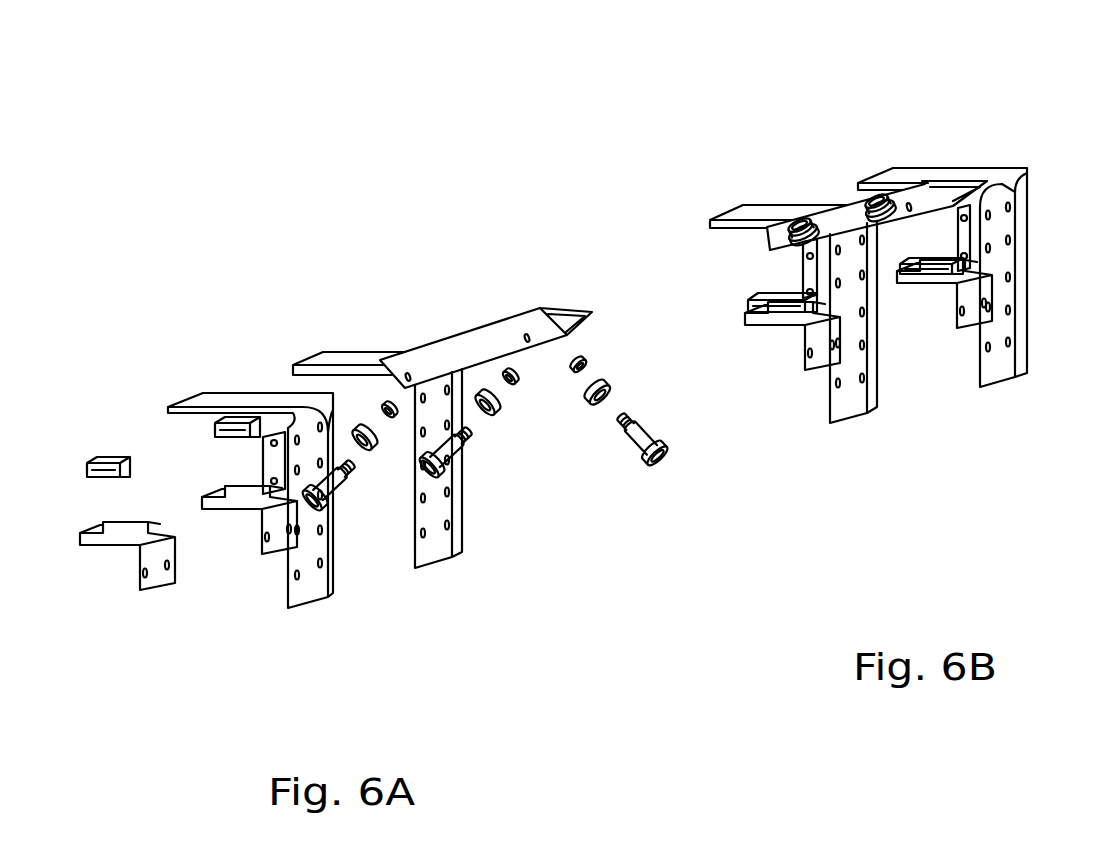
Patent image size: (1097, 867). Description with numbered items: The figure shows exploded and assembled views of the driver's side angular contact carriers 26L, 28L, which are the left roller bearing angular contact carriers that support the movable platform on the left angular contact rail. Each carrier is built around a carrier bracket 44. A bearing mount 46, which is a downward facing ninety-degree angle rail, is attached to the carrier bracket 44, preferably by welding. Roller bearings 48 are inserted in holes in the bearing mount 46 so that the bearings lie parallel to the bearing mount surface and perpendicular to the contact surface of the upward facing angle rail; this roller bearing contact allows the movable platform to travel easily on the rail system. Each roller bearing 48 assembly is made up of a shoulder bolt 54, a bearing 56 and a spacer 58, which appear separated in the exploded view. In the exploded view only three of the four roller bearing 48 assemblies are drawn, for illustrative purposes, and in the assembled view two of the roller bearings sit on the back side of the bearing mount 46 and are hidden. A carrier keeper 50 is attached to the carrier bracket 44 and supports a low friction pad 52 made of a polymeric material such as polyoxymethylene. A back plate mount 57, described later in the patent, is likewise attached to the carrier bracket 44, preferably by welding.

In FIG. 6A, the angular contact carrier 26L is at (215, 350).
In FIG. 6B, the angular contact carrier 26L is at (730, 166).
In FIG. 6A, the angular contact carrier 28L is at (392, 287).
In FIG. 6B, the angular contact carrier 28L is at (968, 130).
In FIG. 6A, the carrier bracket 44 is at (317, 583).
In FIG. 6B, the carrier bracket 44 is at (852, 302).
In FIG. 6A, the bearing mount 46 is at (483, 352).
In FIG. 6B, the bearing mount 46 is at (840, 220).
In FIG. 6A, the roller bearing 48 is at (667, 461).
In FIG. 6B, the roller bearing 48 is at (771, 243).
In FIG. 6A, the carrier keeper 50 is at (150, 557).
In FIG. 6B, the carrier keeper 50 is at (823, 347).
In FIG. 6A, the low friction pad 52 is at (112, 462).
In FIG. 6B, the low friction pad 52 is at (792, 305).
In FIG. 6A, the shoulder bolt 54 is at (650, 428).
In FIG. 6A, the bearing 56 is at (615, 380).
In FIG. 6A, the back plate mount 57 is at (273, 462).
In FIG. 6B, the back plate mount 57 is at (810, 270).
In FIG. 6A, the spacer 58 is at (592, 353).